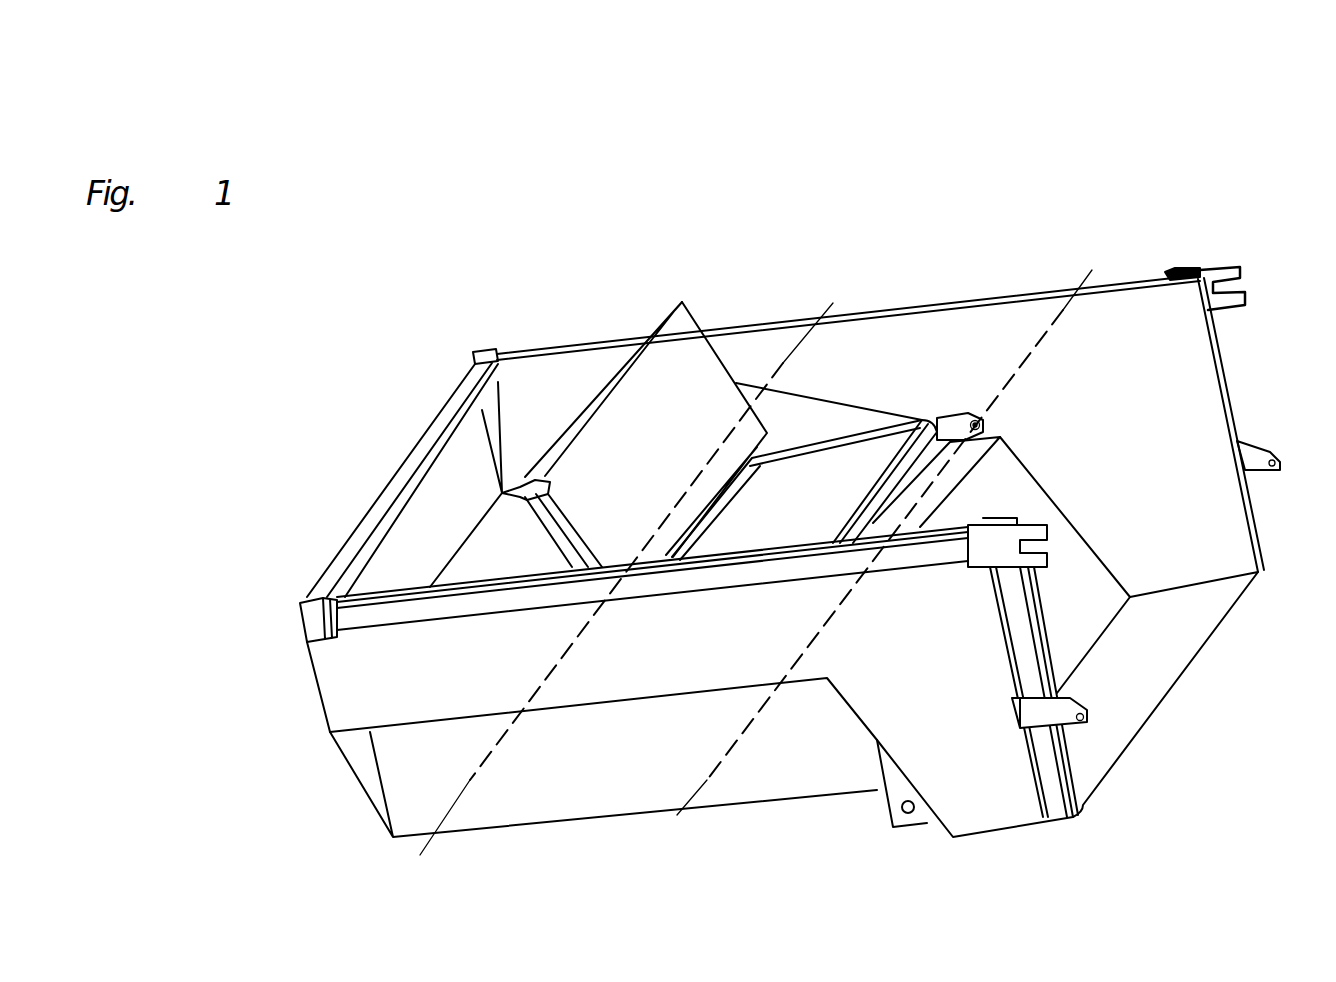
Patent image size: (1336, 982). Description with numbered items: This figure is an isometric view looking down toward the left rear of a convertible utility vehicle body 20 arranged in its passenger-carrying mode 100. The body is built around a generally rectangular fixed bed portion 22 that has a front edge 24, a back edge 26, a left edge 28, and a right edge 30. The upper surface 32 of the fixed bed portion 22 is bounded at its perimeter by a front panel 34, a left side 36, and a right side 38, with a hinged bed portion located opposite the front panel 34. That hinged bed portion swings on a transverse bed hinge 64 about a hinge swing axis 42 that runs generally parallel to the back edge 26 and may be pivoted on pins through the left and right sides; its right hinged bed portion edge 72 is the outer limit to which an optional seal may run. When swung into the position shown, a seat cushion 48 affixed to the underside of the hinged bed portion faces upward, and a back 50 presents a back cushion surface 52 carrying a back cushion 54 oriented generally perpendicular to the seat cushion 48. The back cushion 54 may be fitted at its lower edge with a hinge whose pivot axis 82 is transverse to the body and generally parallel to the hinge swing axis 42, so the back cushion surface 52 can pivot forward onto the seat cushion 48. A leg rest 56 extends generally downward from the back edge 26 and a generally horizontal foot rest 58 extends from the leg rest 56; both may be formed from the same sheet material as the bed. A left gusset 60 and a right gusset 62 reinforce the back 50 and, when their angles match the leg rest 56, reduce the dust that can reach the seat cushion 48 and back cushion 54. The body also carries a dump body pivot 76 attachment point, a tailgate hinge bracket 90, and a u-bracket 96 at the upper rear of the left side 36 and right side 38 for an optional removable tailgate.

The convertible utility vehicle body 20 is at (438, 355).
The fixed bed portion 22 is at (512, 503).
The front edge 24 is at (450, 552).
The back edge 26 is at (1000, 453).
The left edge 28 is at (633, 700).
The right edge 30 is at (1000, 437).
The upper surface 32 is at (491, 544).
The front panel 34 is at (437, 527).
The left side 36 is at (782, 699).
The right side 38 is at (702, 433).
The hinge swing axis 42 is at (888, 545).
The seat cushion 48 is at (797, 490).
The back 50 is at (530, 545).
The back cushion surface 52 is at (545, 558).
The back cushion 54 is at (657, 313).
The leg rest 56 is at (1067, 652).
The foot rest 58 is at (1173, 630).
The left gusset 60 is at (552, 584).
The right gusset 62 is at (753, 383).
The transverse bed hinge 64 is at (973, 420).
The right hinged bed portion edge 72 is at (938, 412).
The dump body pivot 76 is at (892, 793).
The pivot axis 82 is at (628, 579).
The tailgate hinge bracket 90 is at (1253, 460).
The u-bracket 96 is at (1212, 267).
The passenger-carrying mode 100 is at (1083, 206).